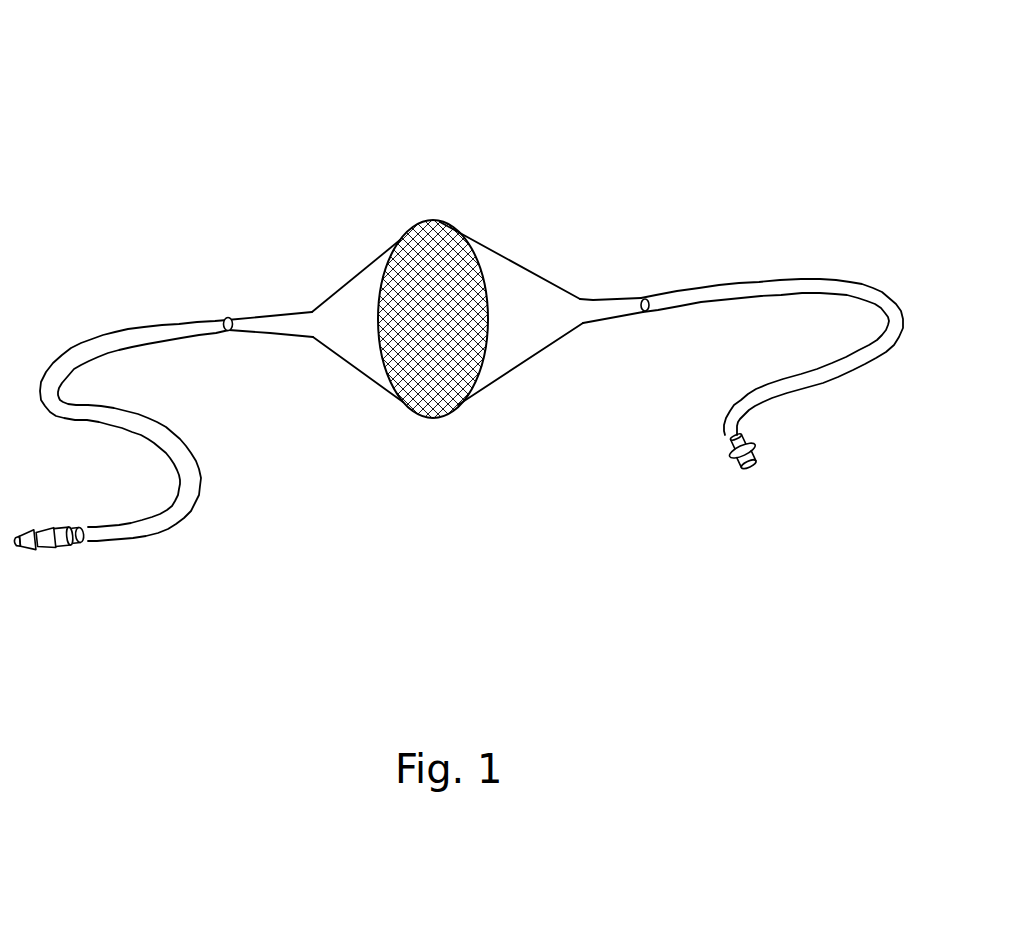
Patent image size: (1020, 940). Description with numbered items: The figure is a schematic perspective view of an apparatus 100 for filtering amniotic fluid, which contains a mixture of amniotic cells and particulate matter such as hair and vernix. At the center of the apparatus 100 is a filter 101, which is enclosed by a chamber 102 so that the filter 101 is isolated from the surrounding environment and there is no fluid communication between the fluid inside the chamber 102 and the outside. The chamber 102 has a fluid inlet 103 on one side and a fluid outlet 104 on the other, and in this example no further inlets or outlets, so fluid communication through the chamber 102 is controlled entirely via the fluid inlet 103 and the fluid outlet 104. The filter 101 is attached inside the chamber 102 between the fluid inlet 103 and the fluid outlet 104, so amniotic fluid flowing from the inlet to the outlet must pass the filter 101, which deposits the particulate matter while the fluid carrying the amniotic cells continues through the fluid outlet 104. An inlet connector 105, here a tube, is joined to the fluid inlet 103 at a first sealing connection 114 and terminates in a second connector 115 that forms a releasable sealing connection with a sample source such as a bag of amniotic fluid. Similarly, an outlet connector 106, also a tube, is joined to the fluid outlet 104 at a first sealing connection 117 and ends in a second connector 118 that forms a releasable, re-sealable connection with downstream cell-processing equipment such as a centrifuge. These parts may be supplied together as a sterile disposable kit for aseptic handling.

The apparatus 100 is at (186, 51).
The filter 101 is at (440, 240).
The chamber 102 is at (357, 278).
The fluid inlet 103 is at (283, 325).
The fluid outlet 104 is at (607, 308).
The inlet connector 105 is at (110, 292).
The outlet connector 106 is at (821, 242).
The first sealing connection 114 is at (229, 331).
The second connector 115 is at (50, 553).
The first sealing connection 117 is at (647, 310).
The second connector 118 is at (735, 468).